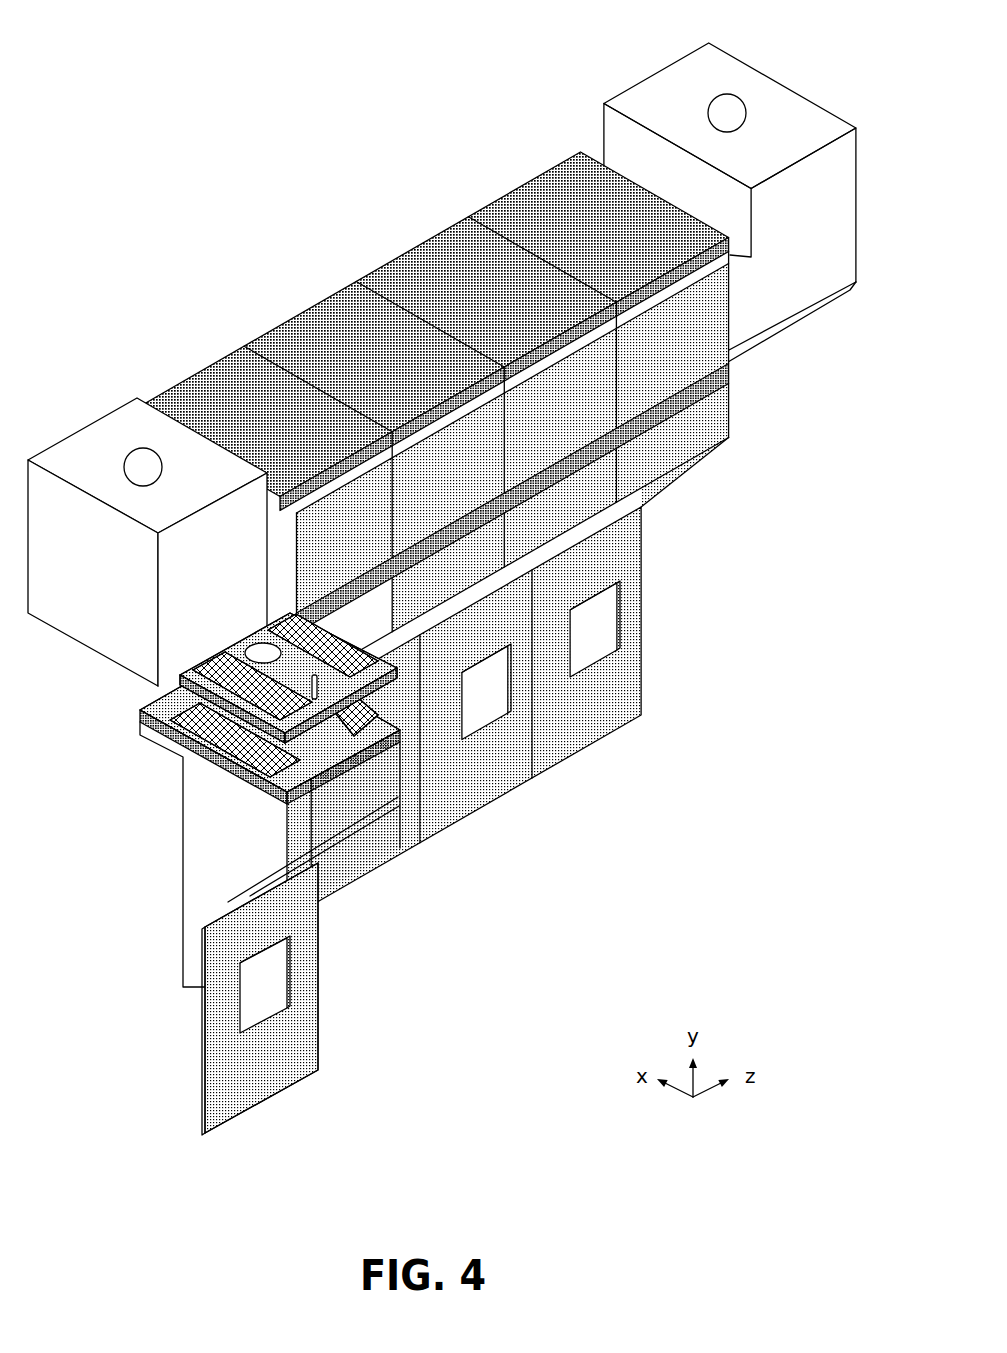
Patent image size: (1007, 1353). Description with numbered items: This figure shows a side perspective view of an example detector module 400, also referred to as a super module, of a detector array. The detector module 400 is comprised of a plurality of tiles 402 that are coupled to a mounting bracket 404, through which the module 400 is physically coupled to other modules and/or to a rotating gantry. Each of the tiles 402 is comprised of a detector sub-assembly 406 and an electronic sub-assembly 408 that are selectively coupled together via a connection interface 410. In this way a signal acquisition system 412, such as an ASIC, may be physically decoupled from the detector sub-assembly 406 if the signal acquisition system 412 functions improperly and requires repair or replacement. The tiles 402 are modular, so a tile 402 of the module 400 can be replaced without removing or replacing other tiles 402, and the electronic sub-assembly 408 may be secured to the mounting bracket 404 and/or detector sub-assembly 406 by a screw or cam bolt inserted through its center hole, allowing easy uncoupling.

The detector module 400 is at (112, 36).
The tiles 402 is at (520, 182).
The mounting bracket 404 is at (99, 415).
The detector sub-assembly 406 is at (513, 579).
The electronic sub-assembly 408 is at (317, 997).
The connection interface 410 is at (375, 721).
The signal acquisition system 412 is at (240, 1000).